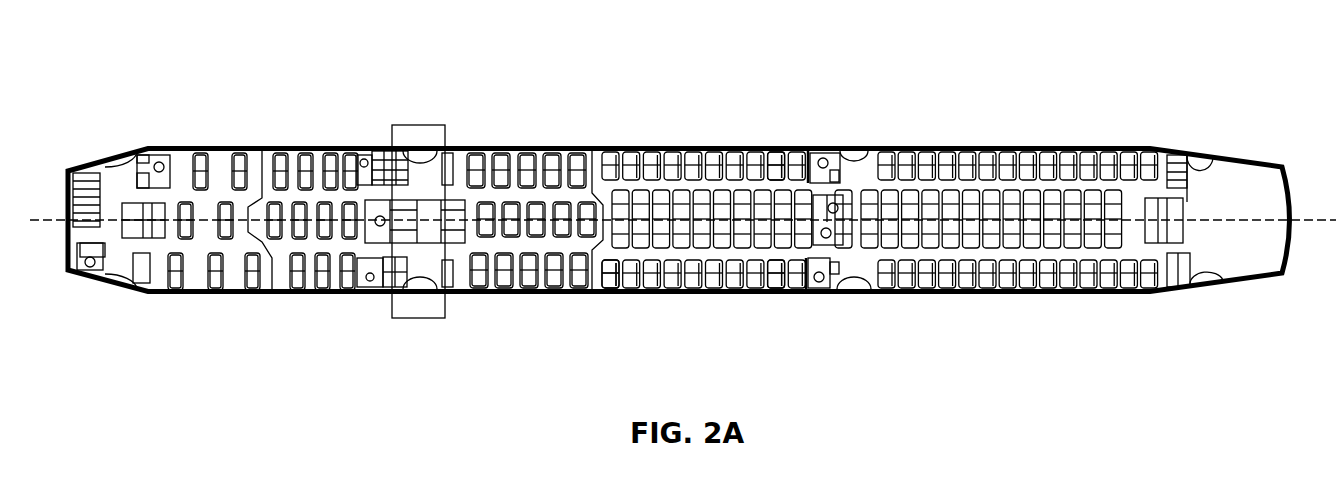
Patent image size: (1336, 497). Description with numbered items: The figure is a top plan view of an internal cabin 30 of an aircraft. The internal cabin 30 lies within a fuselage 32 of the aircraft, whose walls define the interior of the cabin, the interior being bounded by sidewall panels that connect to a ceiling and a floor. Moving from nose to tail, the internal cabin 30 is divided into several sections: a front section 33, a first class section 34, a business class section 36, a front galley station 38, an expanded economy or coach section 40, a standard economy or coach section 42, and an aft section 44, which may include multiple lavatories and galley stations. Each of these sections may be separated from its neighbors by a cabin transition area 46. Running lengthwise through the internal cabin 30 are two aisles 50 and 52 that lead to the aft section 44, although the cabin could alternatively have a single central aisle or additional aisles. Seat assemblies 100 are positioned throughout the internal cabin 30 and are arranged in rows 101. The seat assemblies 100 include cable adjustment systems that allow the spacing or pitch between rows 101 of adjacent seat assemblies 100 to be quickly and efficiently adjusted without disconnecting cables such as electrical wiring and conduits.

The internal cabin 30 is at (207, 51).
The fuselage 32 is at (542, 104).
The front section 33 is at (125, 310).
The first class section 34 is at (225, 292).
The business class section 36 is at (297, 148).
The front galley station 38 is at (418, 318).
The expanded economy or coach section 40 is at (520, 293).
The standard economy or coach section 42 is at (650, 148).
The aft section 44 is at (1215, 172).
The cabin transition area 46 is at (143, 148).
The aisle 50 is at (1008, 187).
The aisle 52 is at (1028, 258).
The seat assembly 100 is at (774, 160).
The row 101 is at (767, 138).